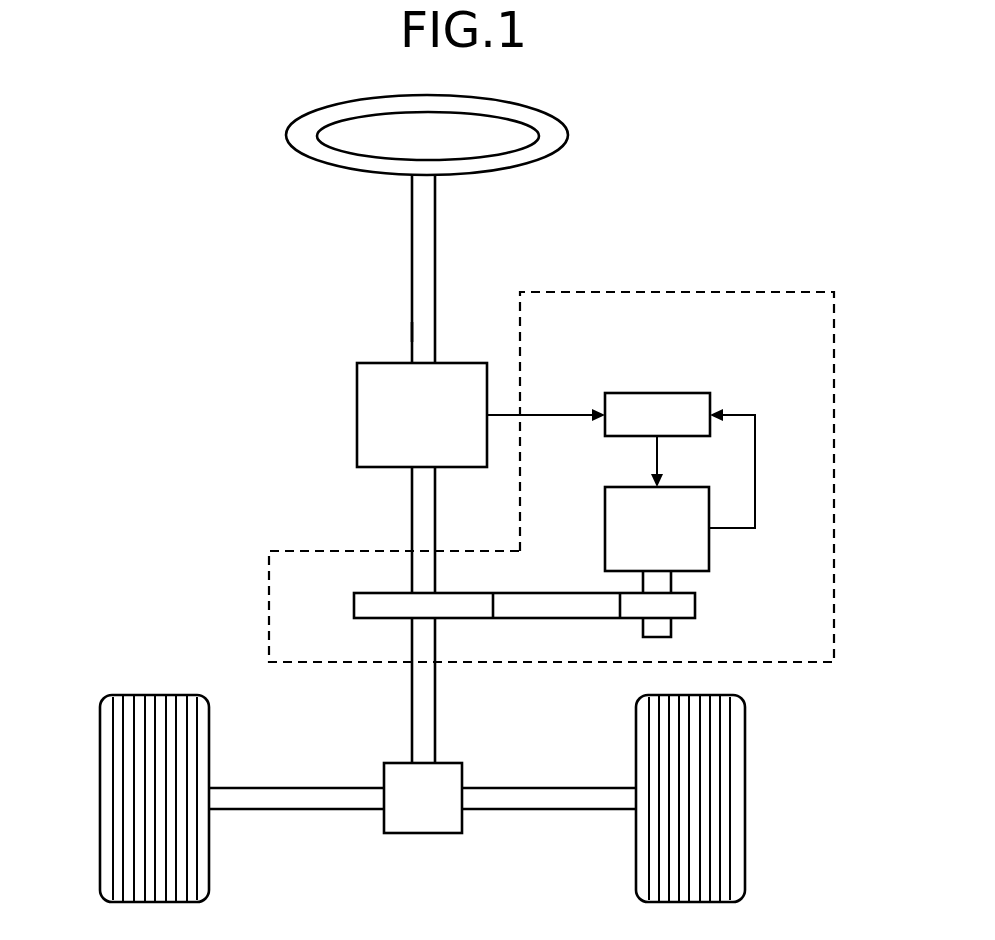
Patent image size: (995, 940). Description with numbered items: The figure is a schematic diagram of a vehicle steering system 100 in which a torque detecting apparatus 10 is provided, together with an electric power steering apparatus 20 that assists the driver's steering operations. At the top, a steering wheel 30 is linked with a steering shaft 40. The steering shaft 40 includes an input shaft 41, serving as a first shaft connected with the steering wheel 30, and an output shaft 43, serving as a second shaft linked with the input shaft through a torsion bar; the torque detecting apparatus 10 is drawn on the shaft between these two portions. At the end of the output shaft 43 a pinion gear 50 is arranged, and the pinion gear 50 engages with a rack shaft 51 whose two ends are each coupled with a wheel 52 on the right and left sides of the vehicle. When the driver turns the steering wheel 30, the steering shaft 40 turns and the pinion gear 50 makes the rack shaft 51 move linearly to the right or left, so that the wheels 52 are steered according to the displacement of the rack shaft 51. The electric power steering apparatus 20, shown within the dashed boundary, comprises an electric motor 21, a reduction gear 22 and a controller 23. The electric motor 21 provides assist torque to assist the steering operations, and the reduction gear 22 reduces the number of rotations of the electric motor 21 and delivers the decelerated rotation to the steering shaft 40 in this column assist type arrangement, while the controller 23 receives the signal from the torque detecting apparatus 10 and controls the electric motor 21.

The steering system 100 is at (746, 189).
The steering wheel 30 is at (568, 133).
The steering shaft 40 is at (435, 224).
The input shaft 41 is at (413, 332).
The torque detecting apparatus 10 is at (357, 390).
The output shaft 43 is at (413, 510).
The electric power steering apparatus 20 is at (836, 338).
The controller 23 is at (685, 393).
The electric motor 21 is at (685, 487).
The reduction gear 22 is at (695, 607).
The pinion gear 50 is at (420, 834).
The rack shaft 51 is at (306, 810).
The wheel 52 is at (100, 736).